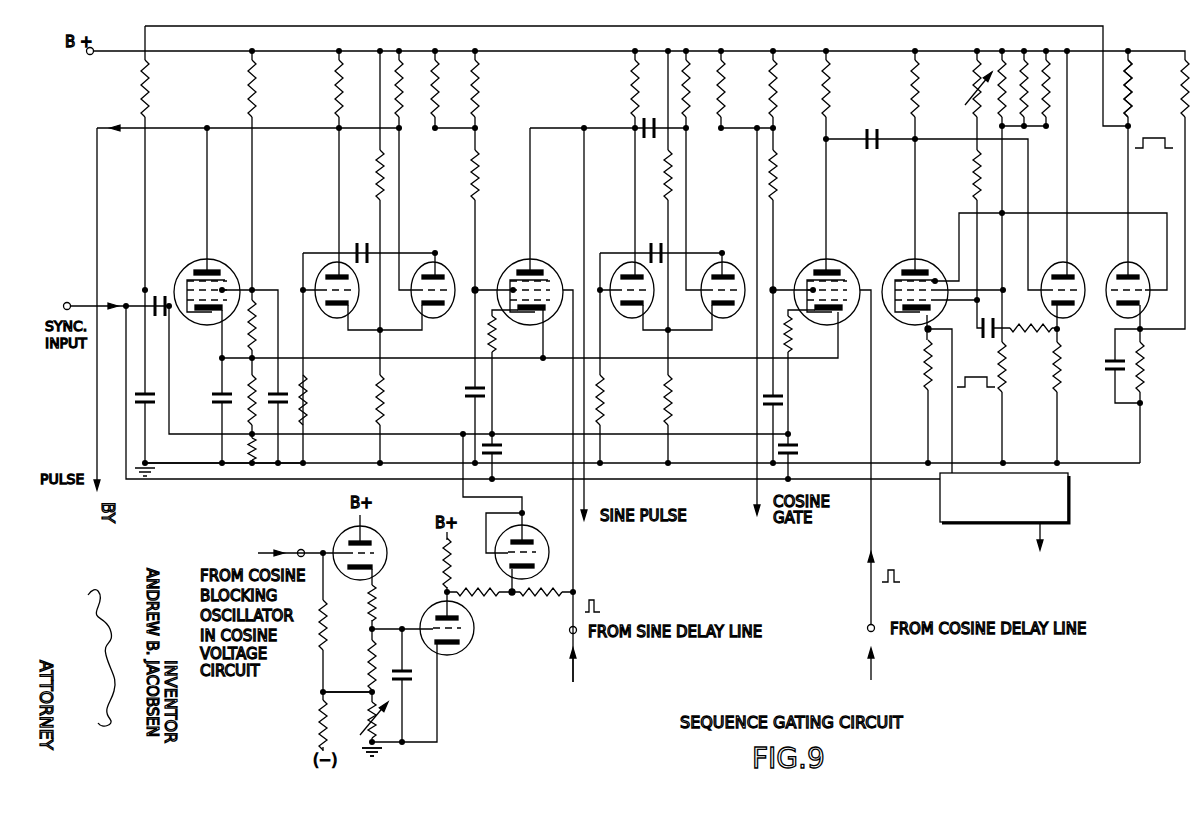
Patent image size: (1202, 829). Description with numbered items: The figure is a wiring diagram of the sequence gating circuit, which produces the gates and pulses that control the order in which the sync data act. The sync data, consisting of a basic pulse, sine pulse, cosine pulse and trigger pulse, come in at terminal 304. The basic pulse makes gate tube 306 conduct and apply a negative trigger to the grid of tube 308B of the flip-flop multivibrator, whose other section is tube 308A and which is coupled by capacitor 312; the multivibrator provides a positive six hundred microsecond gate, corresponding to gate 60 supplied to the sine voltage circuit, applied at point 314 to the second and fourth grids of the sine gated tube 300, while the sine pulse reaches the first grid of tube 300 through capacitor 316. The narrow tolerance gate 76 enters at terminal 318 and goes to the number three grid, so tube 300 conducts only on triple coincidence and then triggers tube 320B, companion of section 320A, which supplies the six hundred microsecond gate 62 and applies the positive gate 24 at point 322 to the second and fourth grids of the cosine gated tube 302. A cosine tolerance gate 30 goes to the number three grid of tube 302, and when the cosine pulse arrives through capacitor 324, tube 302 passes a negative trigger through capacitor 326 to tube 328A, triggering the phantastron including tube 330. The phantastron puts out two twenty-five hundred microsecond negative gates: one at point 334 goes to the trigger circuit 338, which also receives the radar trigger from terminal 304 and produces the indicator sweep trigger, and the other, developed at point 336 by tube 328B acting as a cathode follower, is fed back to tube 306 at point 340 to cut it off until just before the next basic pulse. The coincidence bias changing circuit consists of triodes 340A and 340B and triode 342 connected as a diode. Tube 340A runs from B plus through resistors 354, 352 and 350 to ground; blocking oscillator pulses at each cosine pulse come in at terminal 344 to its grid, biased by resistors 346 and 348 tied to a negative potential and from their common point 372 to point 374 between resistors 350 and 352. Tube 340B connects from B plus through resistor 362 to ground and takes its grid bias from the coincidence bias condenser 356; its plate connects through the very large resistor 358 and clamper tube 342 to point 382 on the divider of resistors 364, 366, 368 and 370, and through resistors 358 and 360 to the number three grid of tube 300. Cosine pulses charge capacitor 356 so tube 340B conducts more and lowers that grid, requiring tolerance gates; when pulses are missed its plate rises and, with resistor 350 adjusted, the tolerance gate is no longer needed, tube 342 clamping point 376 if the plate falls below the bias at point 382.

The resistor 364 is at (258, 97).
The capacitor 312 is at (360, 114).
The terminal 318 is at (646, 149).
The capacitor 326 is at (871, 126).
The point 336 is at (1131, 124).
The input terminal 304 is at (68, 301).
The point 340 is at (150, 287).
The gate tube 306 is at (223, 260).
The multivibrator tube section 308A is at (325, 264).
The multivibrator tube 308B is at (452, 264).
The point 314 is at (476, 288).
The sine gated tube 300 is at (560, 262).
The multivibrator tube section 320A is at (620, 262).
The tube 320B is at (738, 262).
The point 322 is at (775, 288).
The cosine gated tube 302 is at (860, 262).
The phantastron tube 330 is at (932, 262).
The tube 328A is at (1048, 262).
The cathode follower tube 328B is at (1112, 262).
The resistor 366 is at (250, 345).
The resistor 368 is at (250, 395).
The point 382 is at (252, 440).
The resistor 370 is at (262, 457).
The capacitor 316 is at (503, 450).
The capacitor 324 is at (798, 449).
The point 334 is at (925, 332).
The trigger circuit 338 is at (1070, 505).
The terminal 344 is at (302, 549).
The triode 340A is at (383, 540).
The resistor 362 is at (445, 560).
The resistor 358 is at (466, 590).
The resistor 354 is at (377, 603).
The resistor 346 is at (328, 633).
The resistor 352 is at (368, 652).
The common point 374 is at (369, 694).
The resistor 348 is at (368, 728).
The common connection point 372 is at (323, 698).
The coincidence bias condenser 356 is at (412, 676).
The resistor 350 is at (377, 745).
The point 376 is at (511, 596).
The resistor 360 is at (558, 596).
The triode 340B is at (474, 630).
The clamper tube 342 is at (560, 523).
The tolerance gate 76 is at (600, 605).
The gate 62 is at (652, 516).
The positive gate 24 is at (794, 516).
The cosine tolerance gate 30 is at (875, 627).
The gate 60 is at (94, 493).